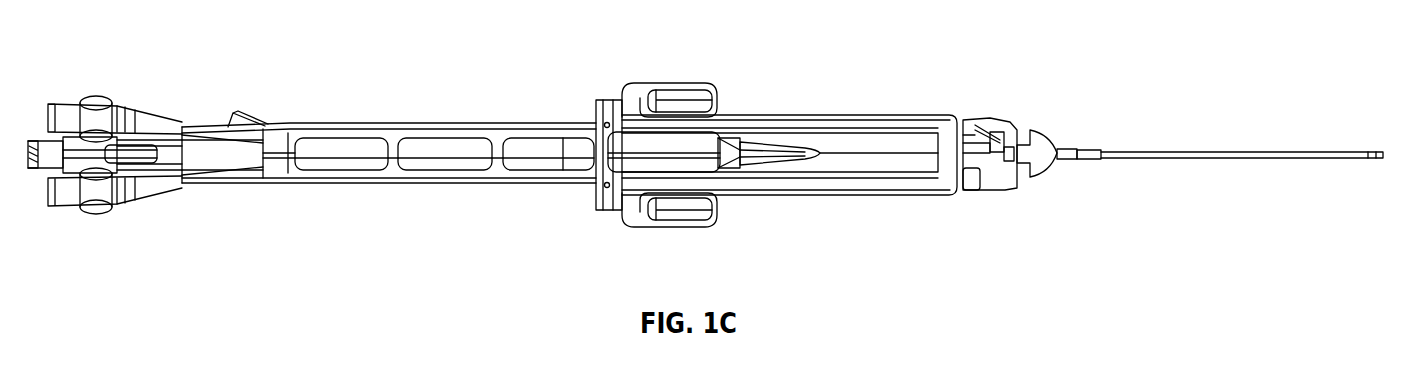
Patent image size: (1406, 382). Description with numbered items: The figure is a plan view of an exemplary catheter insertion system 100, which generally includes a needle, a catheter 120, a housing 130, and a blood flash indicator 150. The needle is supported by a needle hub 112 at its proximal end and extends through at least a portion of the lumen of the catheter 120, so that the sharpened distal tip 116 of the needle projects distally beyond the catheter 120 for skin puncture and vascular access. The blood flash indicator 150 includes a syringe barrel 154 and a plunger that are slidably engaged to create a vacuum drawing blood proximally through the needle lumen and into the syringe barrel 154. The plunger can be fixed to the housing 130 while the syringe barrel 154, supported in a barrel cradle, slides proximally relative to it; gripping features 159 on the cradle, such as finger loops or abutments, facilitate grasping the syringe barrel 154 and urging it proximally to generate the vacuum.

The catheter insertion system 100 is at (93, 31).
The needle hub 112 is at (90, 153).
The distal tip 116 is at (1383, 150).
The catheter 120 is at (1255, 156).
The housing 130 is at (228, 167).
The blood flash indicator 150 is at (447, 152).
The syringe barrel 154 is at (333, 165).
The gripping features 159 is at (732, 138).